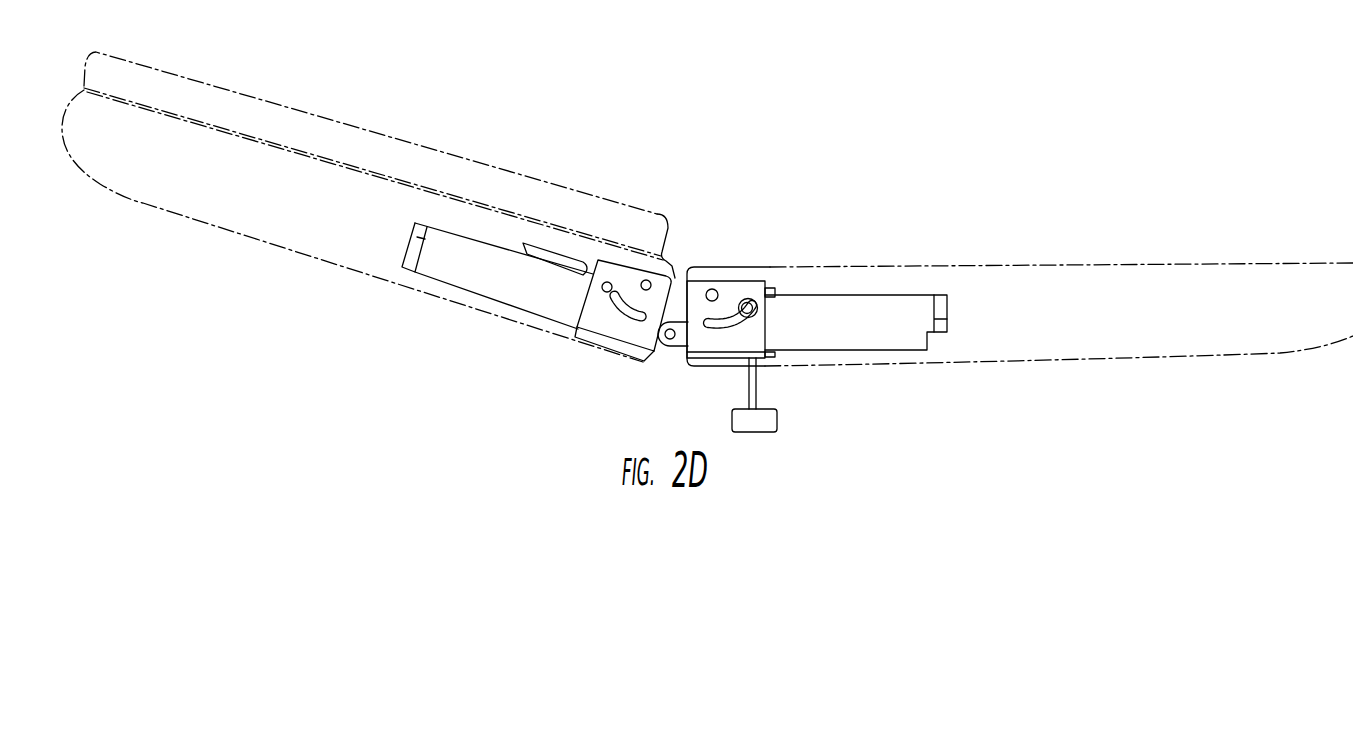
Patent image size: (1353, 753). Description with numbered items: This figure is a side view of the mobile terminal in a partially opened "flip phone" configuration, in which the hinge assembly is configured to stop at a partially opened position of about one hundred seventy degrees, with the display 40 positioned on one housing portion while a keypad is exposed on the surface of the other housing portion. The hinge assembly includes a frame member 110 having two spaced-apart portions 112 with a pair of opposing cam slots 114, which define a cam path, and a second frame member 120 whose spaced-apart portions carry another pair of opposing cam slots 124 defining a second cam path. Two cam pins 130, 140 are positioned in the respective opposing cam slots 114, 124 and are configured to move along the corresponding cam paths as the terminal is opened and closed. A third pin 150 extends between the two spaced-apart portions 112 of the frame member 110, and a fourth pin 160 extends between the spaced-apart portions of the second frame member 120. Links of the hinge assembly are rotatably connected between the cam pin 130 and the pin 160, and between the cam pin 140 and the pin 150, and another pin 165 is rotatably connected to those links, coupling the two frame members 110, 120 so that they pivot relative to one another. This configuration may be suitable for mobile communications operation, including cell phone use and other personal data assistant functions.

The display 40 is at (468, 163).
The frame member 110 is at (561, 263).
The spaced-apart portions 112 is at (617, 328).
The cam slots 114 is at (609, 294).
The second frame member 120 is at (817, 325).
The cam slots 124 is at (727, 328).
The cam pin 130 is at (607, 282).
The cam pin 140 is at (751, 304).
The third pin 150 is at (647, 280).
The fourth pin 160 is at (716, 289).
The pin 165 is at (669, 340).